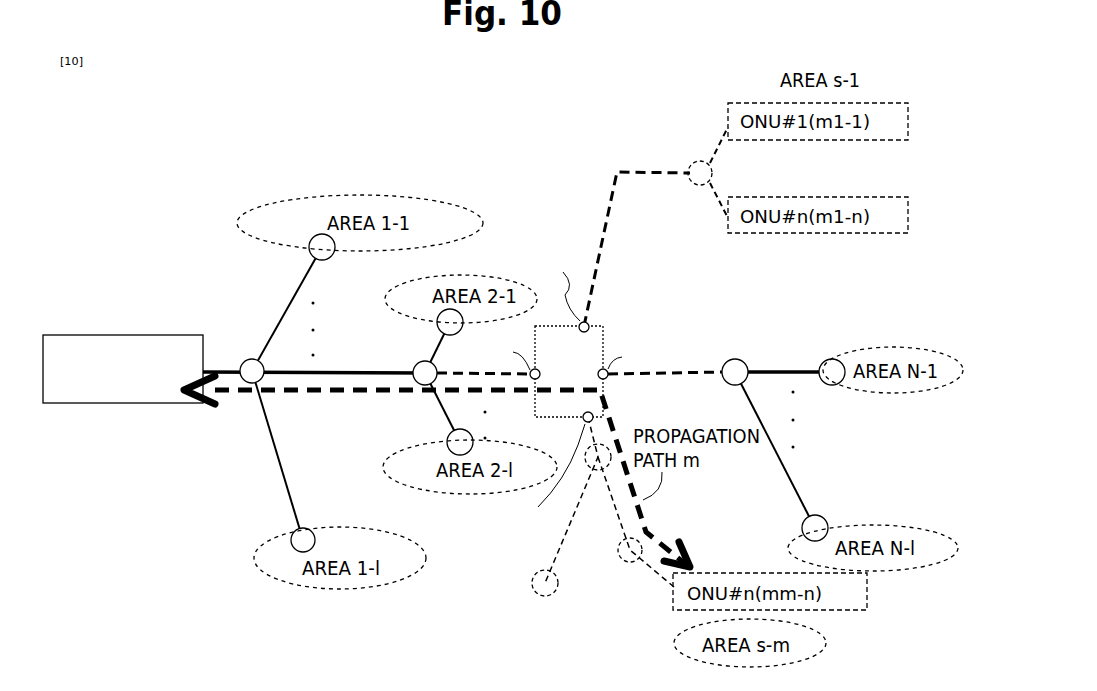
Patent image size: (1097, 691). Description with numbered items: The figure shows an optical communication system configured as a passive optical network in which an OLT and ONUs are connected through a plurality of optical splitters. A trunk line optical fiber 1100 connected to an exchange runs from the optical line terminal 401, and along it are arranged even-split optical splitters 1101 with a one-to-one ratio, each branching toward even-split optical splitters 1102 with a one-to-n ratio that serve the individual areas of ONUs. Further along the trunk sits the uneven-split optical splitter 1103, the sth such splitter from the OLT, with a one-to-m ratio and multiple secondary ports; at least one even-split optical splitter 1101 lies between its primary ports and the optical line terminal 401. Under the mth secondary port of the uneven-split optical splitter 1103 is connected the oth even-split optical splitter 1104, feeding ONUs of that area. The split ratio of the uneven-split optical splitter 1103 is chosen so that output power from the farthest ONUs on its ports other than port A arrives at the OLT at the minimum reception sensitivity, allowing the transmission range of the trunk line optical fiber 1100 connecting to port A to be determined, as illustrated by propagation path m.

The optical line terminal 401 is at (112, 334).
The trunk line optical fiber 1100 is at (220, 378).
The even-split optical splitter (1:1) 1101 is at (247, 357).
The even-split optical splitter (1:n) 1102 is at (305, 235).
The uneven-split optical splitter (1:m) 1103 is at (604, 340).
The even-split optical splitter (1:n) 1104 is at (633, 565).